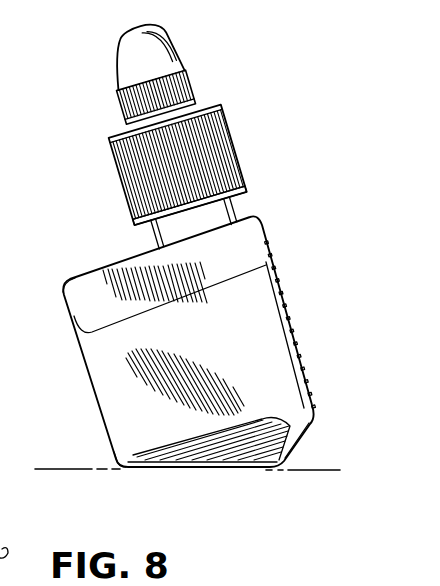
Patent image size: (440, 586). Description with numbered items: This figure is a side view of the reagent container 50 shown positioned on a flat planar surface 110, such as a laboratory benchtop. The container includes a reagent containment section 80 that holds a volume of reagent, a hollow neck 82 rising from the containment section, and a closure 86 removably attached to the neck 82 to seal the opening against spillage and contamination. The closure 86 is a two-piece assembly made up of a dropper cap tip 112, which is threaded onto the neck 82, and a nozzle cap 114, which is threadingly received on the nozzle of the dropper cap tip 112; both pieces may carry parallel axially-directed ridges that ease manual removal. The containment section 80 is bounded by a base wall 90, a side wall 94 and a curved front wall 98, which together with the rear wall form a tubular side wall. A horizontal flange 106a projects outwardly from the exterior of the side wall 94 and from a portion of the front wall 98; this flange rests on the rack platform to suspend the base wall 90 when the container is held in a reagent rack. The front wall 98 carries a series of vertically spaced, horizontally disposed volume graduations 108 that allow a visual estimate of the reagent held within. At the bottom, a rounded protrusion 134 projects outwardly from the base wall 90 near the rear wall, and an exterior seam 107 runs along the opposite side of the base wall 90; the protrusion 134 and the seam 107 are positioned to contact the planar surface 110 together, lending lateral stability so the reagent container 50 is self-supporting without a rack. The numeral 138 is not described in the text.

The reagent container 50 is at (282, 139).
The reagent containment section 80 is at (62, 307).
The neck 82 is at (239, 211).
The closure 86 is at (112, 152).
The base wall 90 is at (304, 439).
The side wall 94 is at (250, 343).
The front wall 98 is at (299, 352).
The horizontal flange 106a is at (233, 278).
The exterior seam 107 is at (265, 470).
The volume graduations 108 is at (274, 273).
The planar surface 110 is at (330, 473).
The dropper cap tip 112 is at (132, 213).
The nozzle cap 114 is at (118, 50).
The protrusion 134 is at (120, 468).
The shoulder corner 138 is at (85, 275).